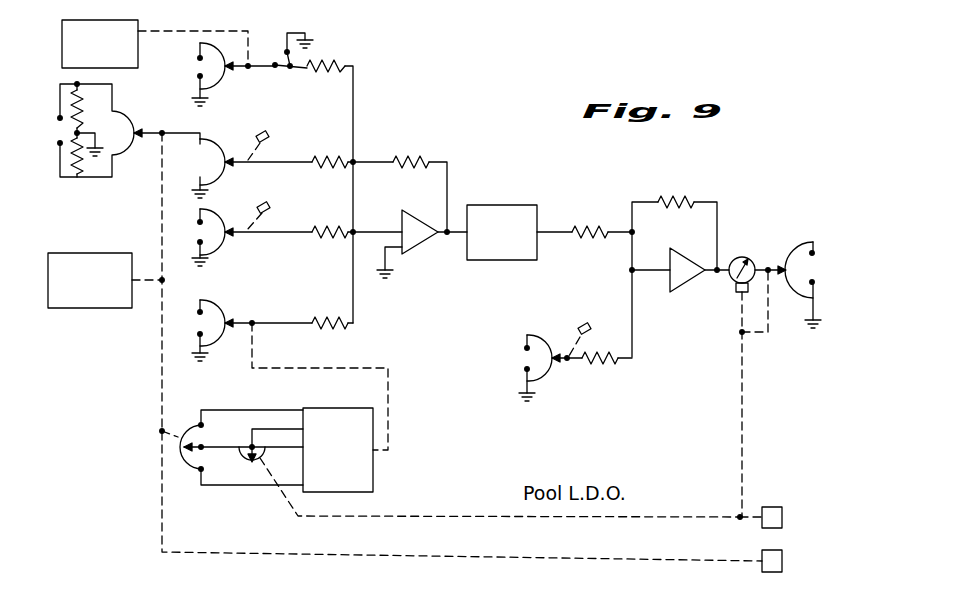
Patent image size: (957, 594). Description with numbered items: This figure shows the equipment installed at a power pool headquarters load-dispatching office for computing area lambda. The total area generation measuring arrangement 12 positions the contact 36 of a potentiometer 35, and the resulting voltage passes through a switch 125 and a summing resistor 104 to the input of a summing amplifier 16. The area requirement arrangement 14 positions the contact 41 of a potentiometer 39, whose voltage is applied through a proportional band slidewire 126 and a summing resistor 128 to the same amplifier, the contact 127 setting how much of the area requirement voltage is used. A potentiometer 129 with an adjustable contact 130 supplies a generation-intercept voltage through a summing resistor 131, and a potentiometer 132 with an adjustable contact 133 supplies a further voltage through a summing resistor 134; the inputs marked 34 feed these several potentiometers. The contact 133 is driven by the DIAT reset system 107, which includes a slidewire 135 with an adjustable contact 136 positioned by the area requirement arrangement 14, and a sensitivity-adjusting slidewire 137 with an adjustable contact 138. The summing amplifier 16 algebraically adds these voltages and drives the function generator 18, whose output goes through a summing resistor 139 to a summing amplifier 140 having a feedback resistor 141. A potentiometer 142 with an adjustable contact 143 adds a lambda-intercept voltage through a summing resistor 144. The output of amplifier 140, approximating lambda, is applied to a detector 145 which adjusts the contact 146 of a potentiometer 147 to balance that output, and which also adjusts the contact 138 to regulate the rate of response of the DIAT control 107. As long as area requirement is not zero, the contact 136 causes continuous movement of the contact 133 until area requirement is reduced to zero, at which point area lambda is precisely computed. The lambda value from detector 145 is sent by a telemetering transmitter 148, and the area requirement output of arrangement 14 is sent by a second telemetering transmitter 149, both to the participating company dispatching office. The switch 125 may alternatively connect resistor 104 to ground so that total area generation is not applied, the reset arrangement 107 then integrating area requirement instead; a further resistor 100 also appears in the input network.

The total area generation measuring arrangement 12 is at (62, 39).
The area requirement arrangement 14 is at (71, 310).
The summing amplifier 16 is at (416, 251).
The function generator 18 is at (494, 215).
The input terminals 34 is at (199, 66).
The potentiometer 35 is at (216, 88).
The contact 36 is at (243, 70).
The potentiometer 39 is at (124, 113).
The contact 41 is at (152, 131).
The resistor 100 is at (409, 157).
The summing resistor 104 is at (341, 63).
The reset system 107 is at (373, 478).
The switch 125 is at (292, 69).
The proportional band slidewire 126 is at (214, 152).
The contact 127 is at (232, 164).
The summing resistor 128 is at (324, 155).
The potentiometer 129 is at (214, 246).
The adjustable contact 130 is at (236, 235).
The summing resistor 131 is at (327, 225).
The potentiometer 132 is at (213, 304).
The adjustable contact 133 is at (238, 328).
The summing resistor 134 is at (327, 317).
The slidewire 135 is at (199, 423).
The adjustable contact 136 is at (190, 460).
The sensitivity-adjusting slidewire 137 is at (241, 463).
The adjustable contact 138 is at (247, 449).
The summing resistor 139 is at (584, 224).
The summing amplifier 140 is at (683, 288).
The feedback resistor 141 is at (674, 198).
The potentiometer 142 is at (537, 336).
The adjustable contact 143 is at (567, 362).
The summing resistor 144 is at (612, 365).
The detector 145 is at (739, 256).
The contact 146 is at (775, 273).
The potentiometer 147 is at (788, 252).
The telemetering transmitter 148 is at (770, 505).
The telemetering transmitter 149 is at (783, 563).